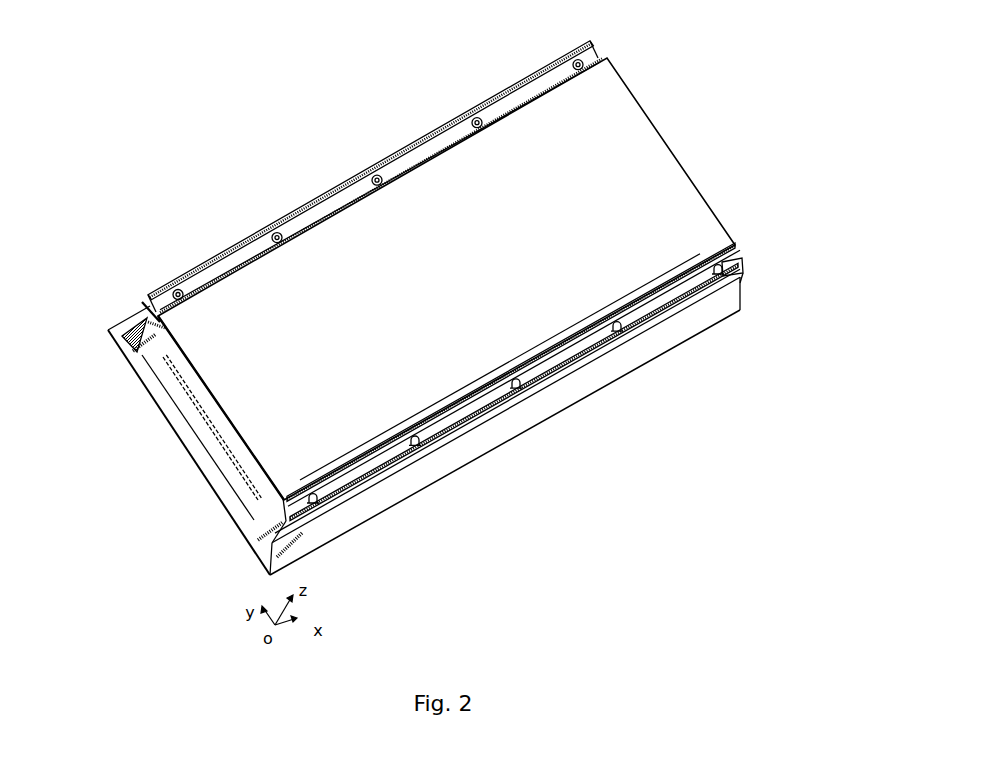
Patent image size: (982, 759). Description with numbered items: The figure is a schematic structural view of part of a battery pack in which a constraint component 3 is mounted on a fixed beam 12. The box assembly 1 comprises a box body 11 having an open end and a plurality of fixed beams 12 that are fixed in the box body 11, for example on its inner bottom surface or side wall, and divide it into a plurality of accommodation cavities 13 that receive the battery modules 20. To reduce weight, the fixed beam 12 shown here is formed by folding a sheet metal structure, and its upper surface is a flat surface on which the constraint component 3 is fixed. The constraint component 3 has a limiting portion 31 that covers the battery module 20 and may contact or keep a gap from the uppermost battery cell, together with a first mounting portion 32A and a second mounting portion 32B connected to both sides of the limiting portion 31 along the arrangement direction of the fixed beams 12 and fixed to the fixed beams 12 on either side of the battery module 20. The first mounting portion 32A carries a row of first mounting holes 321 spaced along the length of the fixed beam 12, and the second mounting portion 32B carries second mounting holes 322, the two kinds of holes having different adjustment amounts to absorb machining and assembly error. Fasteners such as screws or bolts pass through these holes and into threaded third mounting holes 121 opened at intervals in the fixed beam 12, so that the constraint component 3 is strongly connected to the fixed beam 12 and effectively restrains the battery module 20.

The box assembly 1 is at (513, 457).
The box body 11 is at (165, 412).
The fixed beam 12 is at (136, 306).
The accommodation cavity 13 is at (128, 358).
The third mounting hole 121 is at (746, 265).
The battery module 20 is at (236, 495).
The constraint component 3 is at (658, 99).
The limiting portion 31 is at (696, 180).
The first mounting portion 32A is at (320, 197).
The second mounting portion 32B is at (545, 373).
The first mounting hole 321 is at (472, 119).
The second mounting hole 322 is at (643, 320).